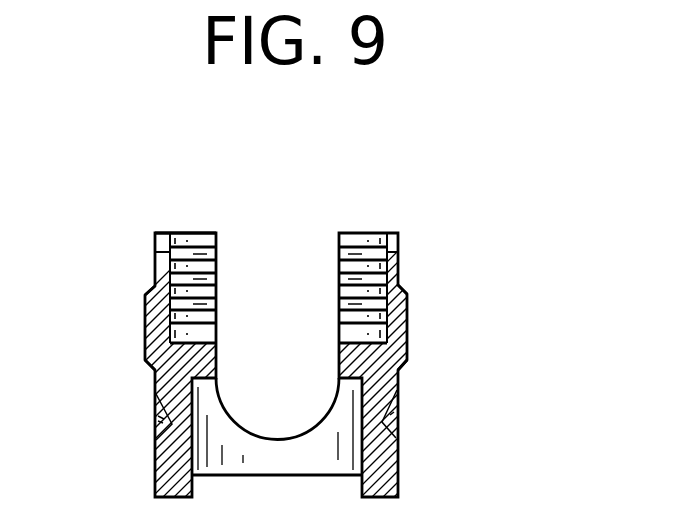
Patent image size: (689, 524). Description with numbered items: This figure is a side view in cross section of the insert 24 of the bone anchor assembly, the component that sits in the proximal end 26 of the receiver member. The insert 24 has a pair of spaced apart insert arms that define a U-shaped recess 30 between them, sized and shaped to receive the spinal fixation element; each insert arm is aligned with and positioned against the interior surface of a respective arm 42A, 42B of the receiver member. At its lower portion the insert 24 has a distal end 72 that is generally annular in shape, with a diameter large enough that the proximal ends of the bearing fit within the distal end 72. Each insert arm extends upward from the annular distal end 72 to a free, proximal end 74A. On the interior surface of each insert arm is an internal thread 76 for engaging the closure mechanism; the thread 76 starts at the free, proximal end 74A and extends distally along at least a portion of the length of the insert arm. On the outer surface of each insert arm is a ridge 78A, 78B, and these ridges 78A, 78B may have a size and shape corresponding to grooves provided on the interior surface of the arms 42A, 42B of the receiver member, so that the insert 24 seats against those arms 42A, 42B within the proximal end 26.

The insert 24 is at (590, 340).
The proximal end of the receiver member 26 is at (156, 256).
The recess 30 is at (296, 244).
The arm of the receiver member 42A is at (393, 281).
The arm of the receiver member 42B is at (150, 284).
The distal end of the insert 72 is at (383, 473).
The free, proximal end of the insert arm 74A is at (165, 247).
The internal thread 76 is at (217, 246).
The ridge 78A is at (407, 338).
The ridge 78B is at (145, 336).